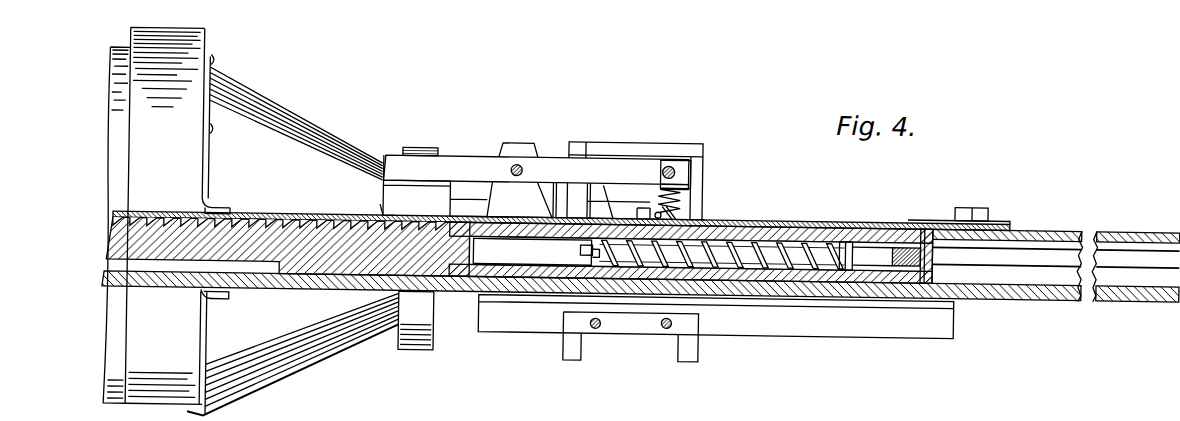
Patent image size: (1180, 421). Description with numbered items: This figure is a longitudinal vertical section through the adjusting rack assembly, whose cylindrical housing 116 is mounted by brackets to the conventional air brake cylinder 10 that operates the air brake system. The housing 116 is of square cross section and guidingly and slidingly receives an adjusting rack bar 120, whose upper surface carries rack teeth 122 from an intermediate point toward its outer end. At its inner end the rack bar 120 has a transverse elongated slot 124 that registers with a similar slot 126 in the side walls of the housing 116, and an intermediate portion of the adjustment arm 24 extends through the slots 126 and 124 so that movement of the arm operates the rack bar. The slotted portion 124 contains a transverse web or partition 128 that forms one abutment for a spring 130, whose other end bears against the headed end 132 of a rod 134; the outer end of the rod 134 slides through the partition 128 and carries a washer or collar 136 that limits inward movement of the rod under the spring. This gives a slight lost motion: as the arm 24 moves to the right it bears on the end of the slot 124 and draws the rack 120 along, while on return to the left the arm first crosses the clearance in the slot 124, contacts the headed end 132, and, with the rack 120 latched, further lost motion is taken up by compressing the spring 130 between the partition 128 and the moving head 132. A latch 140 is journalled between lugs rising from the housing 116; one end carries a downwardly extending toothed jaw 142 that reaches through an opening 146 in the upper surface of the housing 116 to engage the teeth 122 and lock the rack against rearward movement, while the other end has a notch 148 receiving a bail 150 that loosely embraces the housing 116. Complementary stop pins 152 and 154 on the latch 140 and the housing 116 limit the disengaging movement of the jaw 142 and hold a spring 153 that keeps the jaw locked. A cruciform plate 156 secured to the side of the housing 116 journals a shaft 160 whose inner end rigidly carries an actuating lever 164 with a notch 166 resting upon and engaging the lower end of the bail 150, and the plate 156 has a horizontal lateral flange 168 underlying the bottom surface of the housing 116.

The air brake cylinder 10 is at (190, 88).
The adjustment arm 24 is at (907, 236).
The cylindrical housing 116 is at (1137, 216).
The adjusting rack bar 120 is at (380, 277).
The rack teeth 122 is at (276, 213).
The transverse elongated slot 124 is at (860, 230).
The slot 126 is at (1018, 238).
The transverse web or partition 128 is at (580, 255).
The spring 130 is at (717, 219).
The headed end 132 is at (840, 218).
The rod 134 is at (757, 218).
The washer or collar 136 is at (510, 146).
The latch 140 is at (552, 162).
The jaw 142 is at (393, 186).
The opening 146 is at (377, 211).
The notch 148 is at (670, 158).
The bail 150 is at (688, 170).
The stop pin 152 is at (683, 182).
The spring 153 is at (665, 177).
The stop pin 154 is at (680, 202).
The plate 156 is at (908, 313).
The shaft 160 is at (597, 323).
The actuating lever 164 is at (638, 316).
The notch 166 is at (667, 322).
The horizontal lateral flange or rib 168 is at (955, 292).